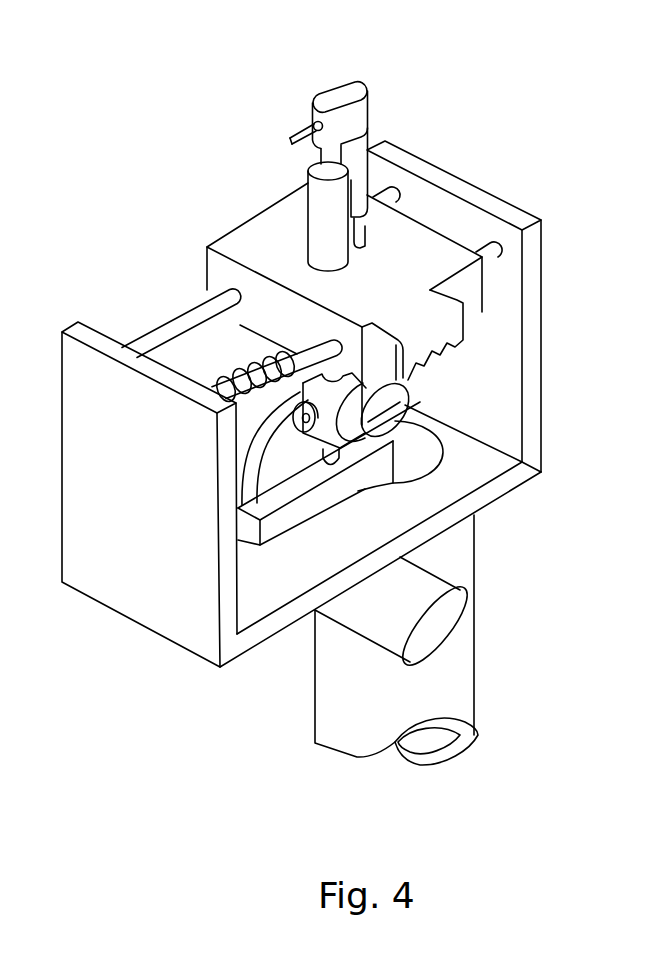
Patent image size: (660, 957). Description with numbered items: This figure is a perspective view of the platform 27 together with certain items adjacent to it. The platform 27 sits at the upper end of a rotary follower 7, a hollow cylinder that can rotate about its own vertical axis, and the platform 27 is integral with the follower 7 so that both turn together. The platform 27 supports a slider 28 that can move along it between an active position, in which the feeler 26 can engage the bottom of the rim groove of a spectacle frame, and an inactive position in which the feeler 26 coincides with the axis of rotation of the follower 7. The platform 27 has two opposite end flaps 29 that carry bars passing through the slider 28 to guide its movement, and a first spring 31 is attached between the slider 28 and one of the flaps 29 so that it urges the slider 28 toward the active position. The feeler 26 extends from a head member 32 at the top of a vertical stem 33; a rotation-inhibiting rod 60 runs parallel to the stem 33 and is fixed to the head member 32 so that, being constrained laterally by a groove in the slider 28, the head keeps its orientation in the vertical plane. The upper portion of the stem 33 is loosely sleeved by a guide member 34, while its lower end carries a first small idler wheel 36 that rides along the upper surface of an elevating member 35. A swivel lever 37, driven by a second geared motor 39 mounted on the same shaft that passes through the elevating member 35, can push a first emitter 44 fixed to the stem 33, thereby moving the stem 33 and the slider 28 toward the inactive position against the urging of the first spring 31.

The rotary follower 7 is at (464, 554).
The feeler 26 is at (291, 139).
The platform 27 is at (262, 636).
The slider 28 is at (245, 236).
The end flaps 29 is at (76, 330).
The first spring 31 is at (208, 384).
The head member 32 is at (360, 86).
The vertical stem 33 is at (322, 154).
The guide member 34 is at (322, 212).
The elevating member 35 is at (282, 493).
The first small idler wheel 36 is at (318, 470).
The swivel lever 37 is at (258, 464).
The second geared motor 39 is at (393, 617).
The first emitter 44 is at (410, 400).
The rotation-inhibiting rod 60 is at (359, 228).